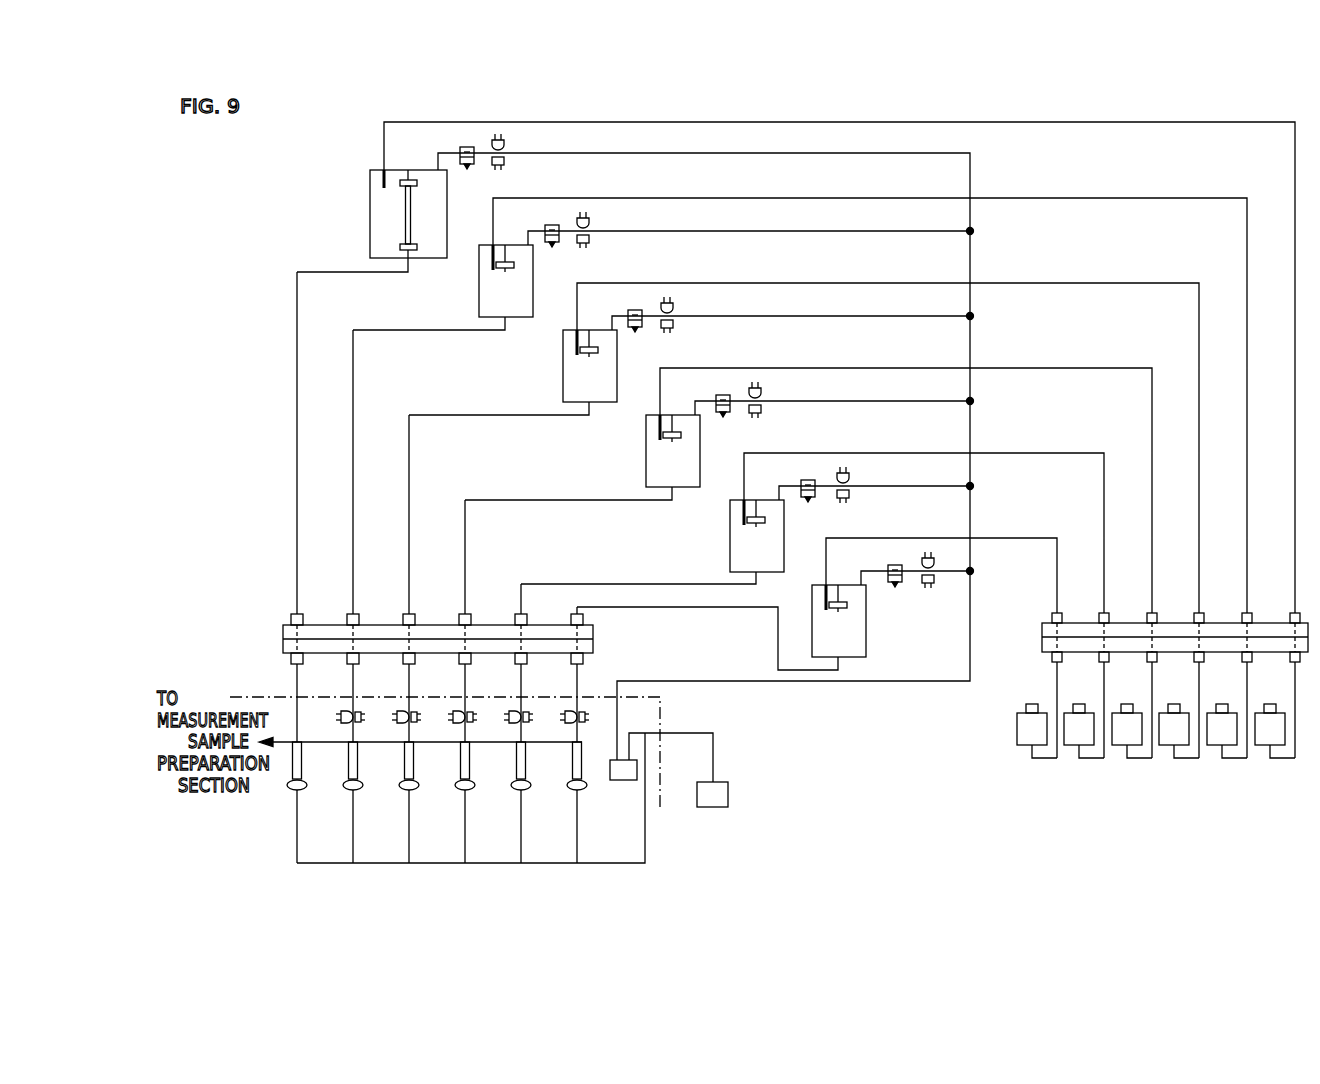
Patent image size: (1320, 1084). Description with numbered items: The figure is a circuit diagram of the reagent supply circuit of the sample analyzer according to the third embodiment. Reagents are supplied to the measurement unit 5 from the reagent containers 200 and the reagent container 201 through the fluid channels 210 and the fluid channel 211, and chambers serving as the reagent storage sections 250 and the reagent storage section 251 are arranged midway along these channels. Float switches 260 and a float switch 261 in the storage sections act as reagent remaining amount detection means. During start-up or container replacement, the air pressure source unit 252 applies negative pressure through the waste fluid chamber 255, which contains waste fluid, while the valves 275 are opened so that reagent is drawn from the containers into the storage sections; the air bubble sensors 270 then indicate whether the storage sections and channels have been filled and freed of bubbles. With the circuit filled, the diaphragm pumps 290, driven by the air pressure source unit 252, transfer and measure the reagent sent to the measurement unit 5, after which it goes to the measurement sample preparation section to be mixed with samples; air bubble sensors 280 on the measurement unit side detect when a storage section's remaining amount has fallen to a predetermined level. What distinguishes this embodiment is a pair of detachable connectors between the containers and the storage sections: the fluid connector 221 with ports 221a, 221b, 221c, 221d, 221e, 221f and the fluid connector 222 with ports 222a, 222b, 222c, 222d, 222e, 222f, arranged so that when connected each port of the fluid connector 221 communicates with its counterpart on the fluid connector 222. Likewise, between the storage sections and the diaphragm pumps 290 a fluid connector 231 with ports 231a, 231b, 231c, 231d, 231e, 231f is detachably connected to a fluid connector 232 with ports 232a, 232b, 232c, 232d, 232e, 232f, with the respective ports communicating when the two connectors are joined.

The measurement unit 5 is at (662, 722).
The reagent container 200 is at (1022, 747).
The reagent container 201 is at (1260, 747).
The fluid channel 210 is at (1012, 197).
The fluid channel 211 is at (1010, 122).
The fluid connector 221 is at (1042, 632).
The fluid connector 222 is at (1042, 647).
The port 221a is at (1051, 613).
The port 221b is at (1098, 613).
The port 221c is at (1146, 613).
The port 221d is at (1193, 613).
The port 221e is at (1241, 613).
The port 221f is at (1289, 613).
The port 222a is at (1051, 662).
The port 222b is at (1098, 662).
The port 222c is at (1146, 662).
The port 222d is at (1193, 662).
The port 222e is at (1241, 662).
The port 222f is at (1289, 662).
The fluid connector 231 is at (283, 633).
The fluid connector 232 is at (283, 648).
The port 231a is at (572, 614).
The port 231b is at (516, 614).
The port 231c is at (460, 614).
The port 231d is at (404, 614).
The port 231e is at (348, 614).
The port 231f is at (292, 614).
The port 232a is at (572, 665).
The port 232b is at (516, 665).
The port 232c is at (460, 665).
The port 232d is at (404, 665).
The port 232e is at (348, 665).
The port 232f is at (292, 665).
The reagent storage section 250 is at (479, 292).
The reagent storage section 251 is at (370, 221).
The air pressure source unit 252 is at (713, 808).
The waste fluid chamber 255 is at (623, 782).
The float switch 260 is at (507, 244).
The float switch 261 is at (408, 170).
The air bubble sensor 270 is at (504, 146).
The valve 275 is at (473, 170).
The air bubble sensor 280 is at (348, 724).
The diaphragm pump 290 is at (295, 795).